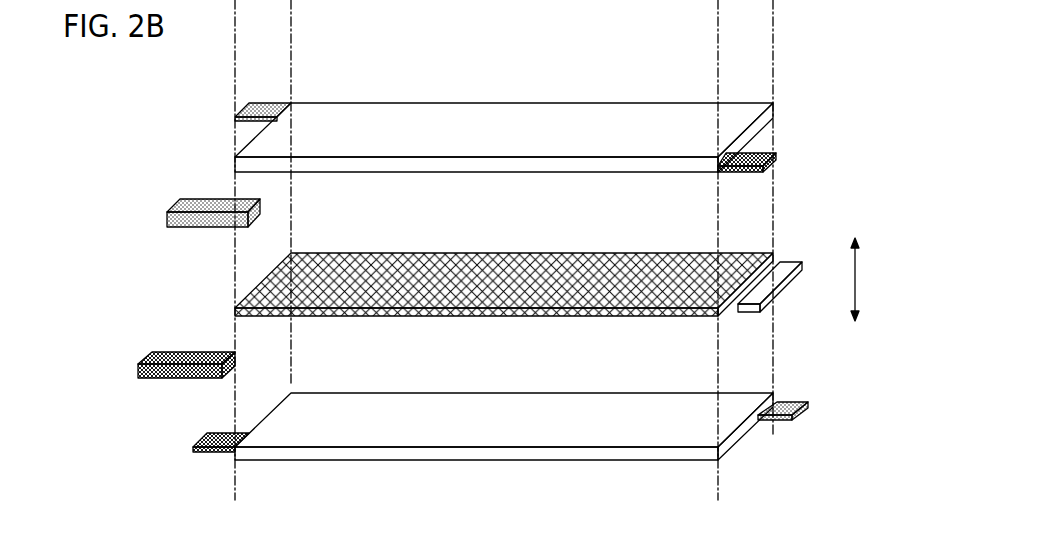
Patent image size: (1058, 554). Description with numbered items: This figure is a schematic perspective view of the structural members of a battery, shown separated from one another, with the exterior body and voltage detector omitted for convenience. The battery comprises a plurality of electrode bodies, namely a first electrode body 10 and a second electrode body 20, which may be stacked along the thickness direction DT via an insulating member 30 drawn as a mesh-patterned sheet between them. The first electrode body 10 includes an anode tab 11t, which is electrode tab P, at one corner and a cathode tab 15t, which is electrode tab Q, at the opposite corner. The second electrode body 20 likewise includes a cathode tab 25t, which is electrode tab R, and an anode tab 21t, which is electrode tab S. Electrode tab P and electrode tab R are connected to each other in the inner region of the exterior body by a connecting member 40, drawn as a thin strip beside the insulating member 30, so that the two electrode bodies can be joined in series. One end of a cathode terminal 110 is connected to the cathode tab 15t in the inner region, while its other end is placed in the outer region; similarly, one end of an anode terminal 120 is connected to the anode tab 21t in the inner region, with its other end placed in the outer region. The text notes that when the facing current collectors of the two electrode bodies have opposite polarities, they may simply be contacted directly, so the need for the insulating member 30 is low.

The first electrode body 10 is at (605, 88).
The cathode tab 15t is at (260, 102).
The anode tab 11t is at (748, 172).
The cathode terminal 110 is at (193, 203).
The insulating member 30 is at (605, 240).
The connecting member 40 is at (785, 266).
The anode terminal 120 is at (178, 352).
The second electrode body 20 is at (605, 378).
The anode tab 21t is at (210, 454).
The cathode tab 25t is at (795, 421).
The thickness direction DT is at (872, 279).